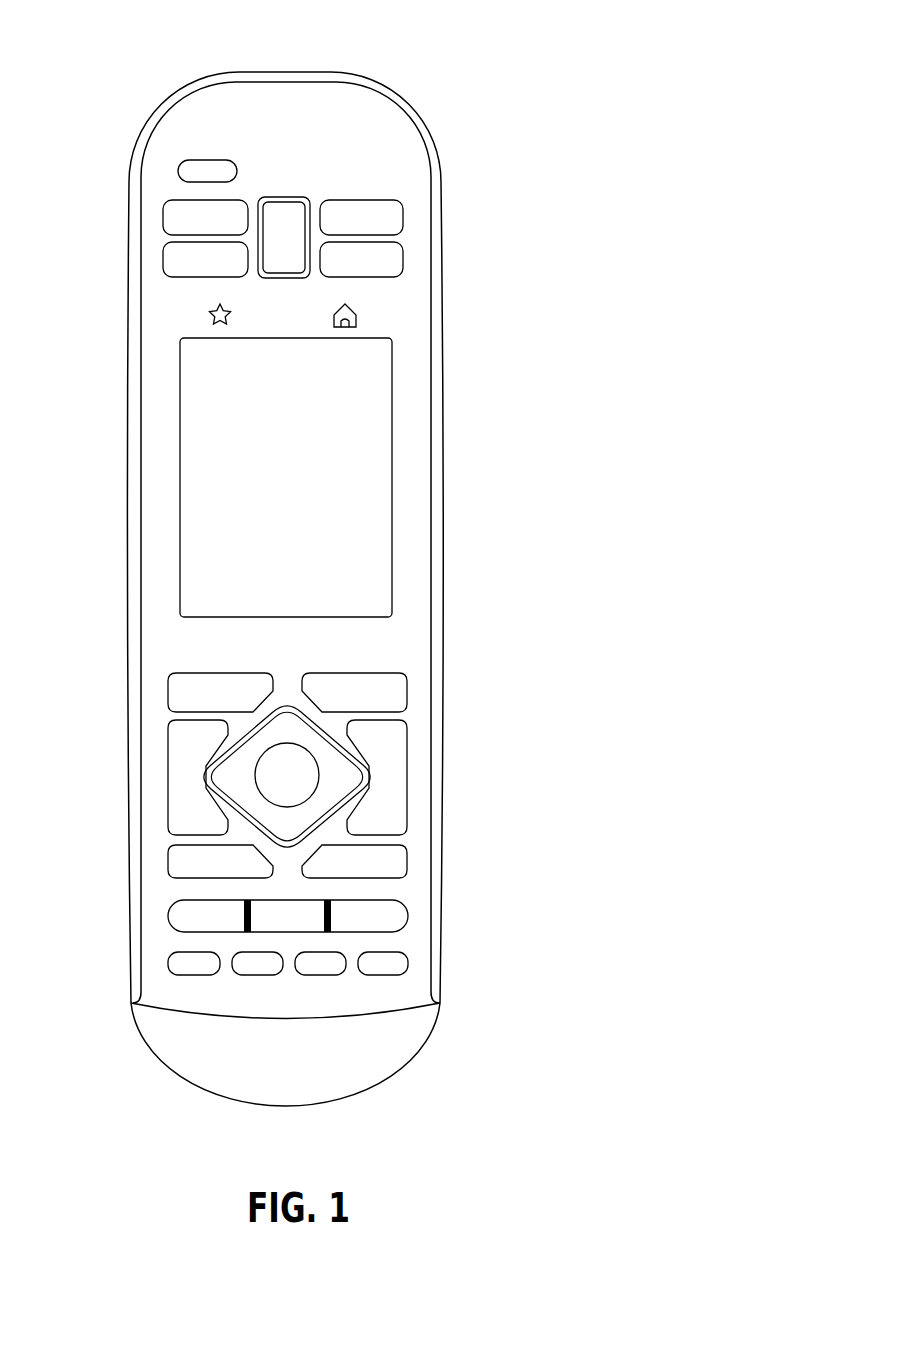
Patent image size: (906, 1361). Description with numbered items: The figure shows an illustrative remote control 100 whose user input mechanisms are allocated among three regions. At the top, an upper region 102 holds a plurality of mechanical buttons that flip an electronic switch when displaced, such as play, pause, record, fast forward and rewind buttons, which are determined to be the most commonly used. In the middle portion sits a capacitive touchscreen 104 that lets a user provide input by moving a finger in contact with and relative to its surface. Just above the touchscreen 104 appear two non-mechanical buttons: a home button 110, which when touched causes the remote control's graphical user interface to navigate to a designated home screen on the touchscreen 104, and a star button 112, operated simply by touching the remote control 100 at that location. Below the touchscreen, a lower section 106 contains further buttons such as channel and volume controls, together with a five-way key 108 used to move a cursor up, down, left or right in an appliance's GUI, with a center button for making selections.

The remote control 100 is at (468, 75).
The upper region 102 is at (77, 133).
The touchscreen 104 is at (302, 492).
The lower section 106 is at (80, 653).
The five-way key 108 is at (325, 762).
The home button 110 is at (367, 315).
The star button 112 is at (238, 307).